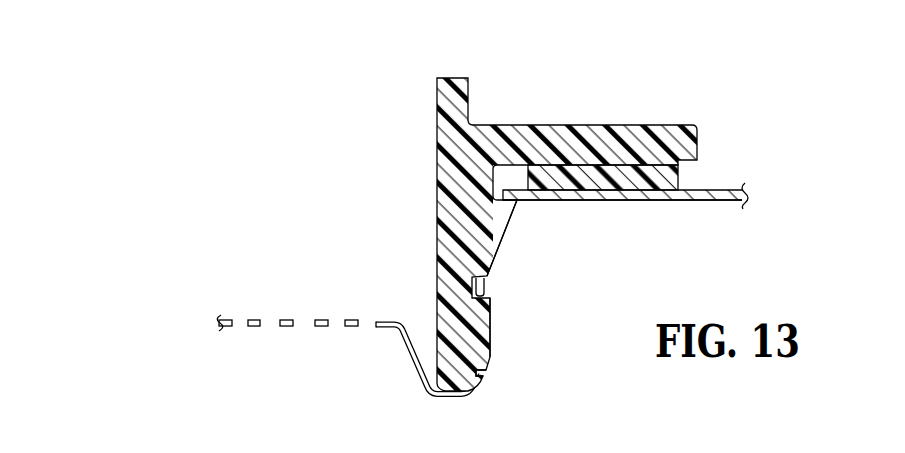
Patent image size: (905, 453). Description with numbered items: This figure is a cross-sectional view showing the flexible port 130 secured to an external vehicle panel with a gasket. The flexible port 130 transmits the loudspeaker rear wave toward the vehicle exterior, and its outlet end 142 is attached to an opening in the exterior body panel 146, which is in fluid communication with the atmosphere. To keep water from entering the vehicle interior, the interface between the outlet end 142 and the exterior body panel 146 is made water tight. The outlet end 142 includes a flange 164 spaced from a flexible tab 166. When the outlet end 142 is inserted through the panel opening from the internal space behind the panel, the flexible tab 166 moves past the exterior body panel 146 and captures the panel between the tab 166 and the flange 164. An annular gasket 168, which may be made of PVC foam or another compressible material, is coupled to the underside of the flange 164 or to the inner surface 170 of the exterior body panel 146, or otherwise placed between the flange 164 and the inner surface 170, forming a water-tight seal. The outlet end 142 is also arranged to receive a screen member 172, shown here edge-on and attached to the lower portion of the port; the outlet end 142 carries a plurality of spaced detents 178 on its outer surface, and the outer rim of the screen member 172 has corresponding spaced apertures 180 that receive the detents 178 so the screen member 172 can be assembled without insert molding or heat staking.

The flexible port 130 is at (408, 101).
The outlet end 142 is at (437, 218).
The exterior body panel 146 is at (639, 204).
The flange 164 is at (697, 145).
The flexible tab 166 is at (518, 243).
The annular gasket 168 is at (590, 168).
The inner surface 170 is at (713, 190).
The screen member 172 is at (300, 340).
The detents 178 is at (490, 335).
The apertures 180 is at (485, 372).